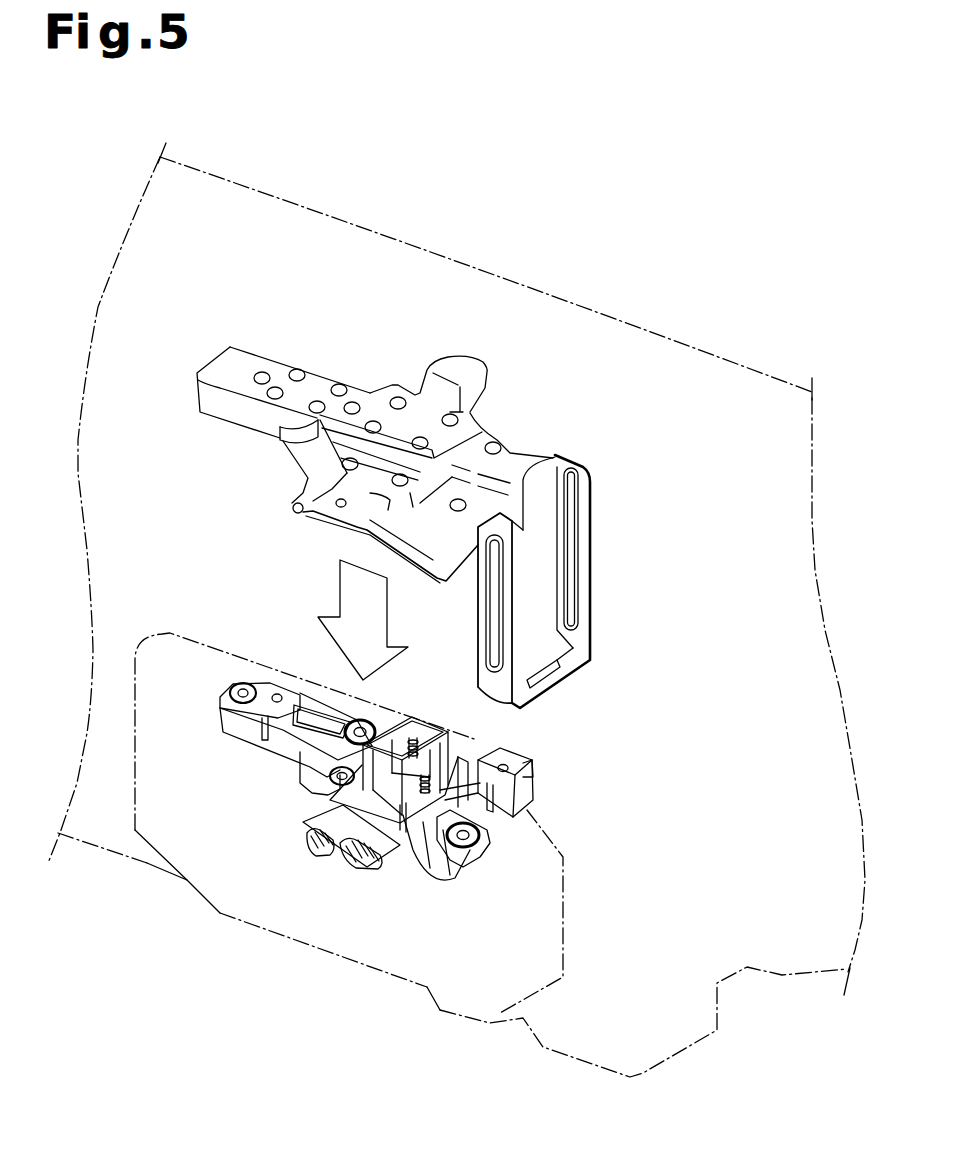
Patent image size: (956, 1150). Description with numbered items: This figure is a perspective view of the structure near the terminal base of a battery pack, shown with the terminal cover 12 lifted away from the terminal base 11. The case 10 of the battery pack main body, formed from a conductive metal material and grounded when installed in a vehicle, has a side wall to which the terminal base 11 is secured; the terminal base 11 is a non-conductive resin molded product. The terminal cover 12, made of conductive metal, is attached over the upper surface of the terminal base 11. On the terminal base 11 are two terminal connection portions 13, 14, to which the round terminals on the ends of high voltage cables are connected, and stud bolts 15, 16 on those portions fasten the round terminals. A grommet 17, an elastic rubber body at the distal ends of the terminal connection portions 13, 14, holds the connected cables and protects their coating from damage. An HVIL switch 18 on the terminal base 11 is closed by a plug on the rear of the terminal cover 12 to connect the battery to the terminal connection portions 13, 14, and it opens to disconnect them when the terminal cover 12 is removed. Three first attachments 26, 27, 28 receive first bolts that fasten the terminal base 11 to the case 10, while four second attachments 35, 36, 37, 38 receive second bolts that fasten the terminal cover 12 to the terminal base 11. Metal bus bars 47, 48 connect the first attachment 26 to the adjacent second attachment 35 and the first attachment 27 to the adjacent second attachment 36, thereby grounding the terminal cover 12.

The case 10 is at (150, 866).
The terminal base 11 is at (565, 812).
The terminal cover 12 is at (230, 448).
The terminal connection portion 13 is at (352, 816).
The terminal connection portion 14 is at (387, 872).
The stud bolt 15 is at (418, 730).
The stud bolt 16 is at (458, 738).
The grommet 17 is at (333, 863).
The HVIL switch 18 is at (315, 716).
The first attachment 26 is at (241, 690).
The first attachment 27 is at (480, 760).
The first attachment 28 is at (302, 776).
The second attachment 35 is at (298, 692).
The second attachment 36 is at (531, 762).
The second attachment 37 is at (370, 724).
The second attachment 38 is at (463, 864).
The bus bar 47 is at (268, 690).
The bus bar 48 is at (506, 757).